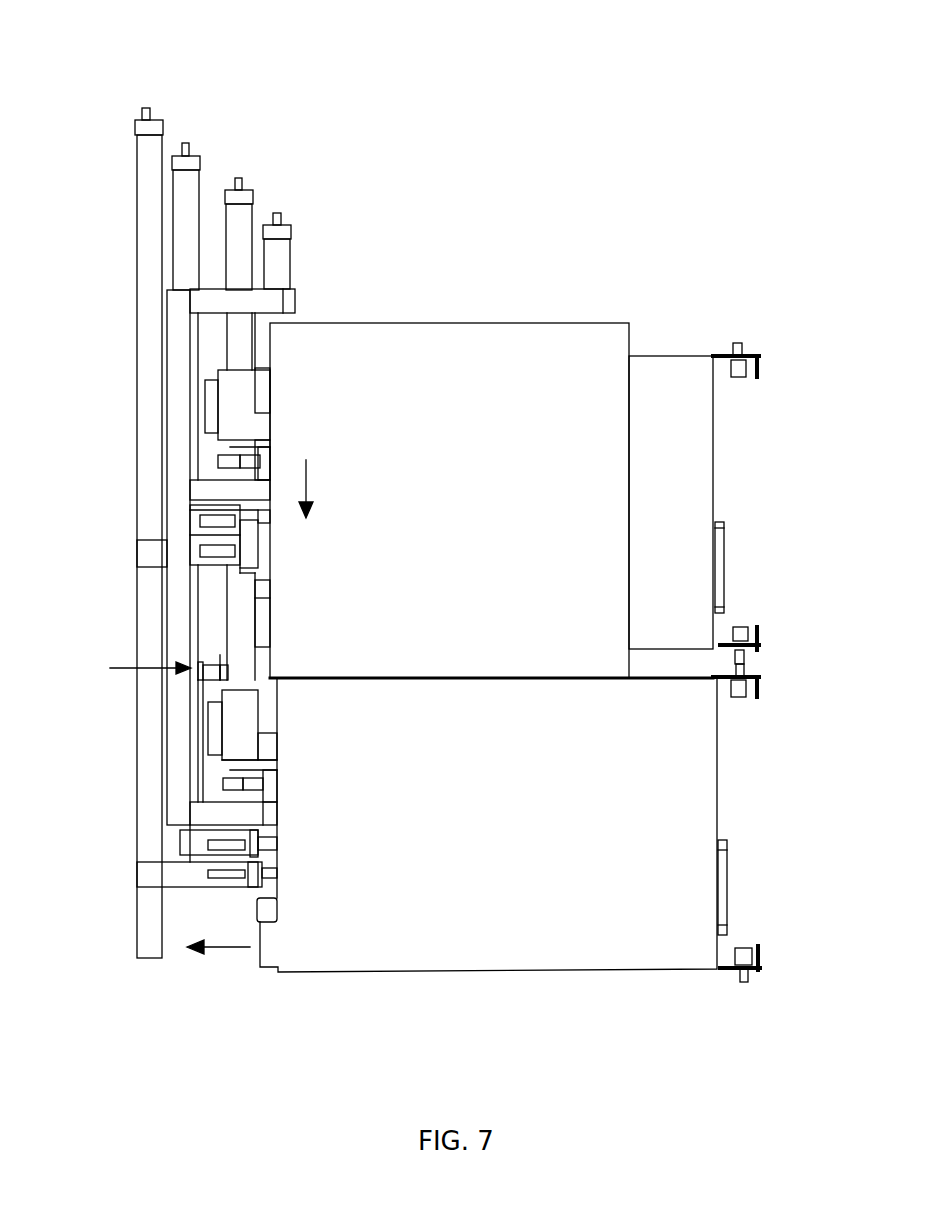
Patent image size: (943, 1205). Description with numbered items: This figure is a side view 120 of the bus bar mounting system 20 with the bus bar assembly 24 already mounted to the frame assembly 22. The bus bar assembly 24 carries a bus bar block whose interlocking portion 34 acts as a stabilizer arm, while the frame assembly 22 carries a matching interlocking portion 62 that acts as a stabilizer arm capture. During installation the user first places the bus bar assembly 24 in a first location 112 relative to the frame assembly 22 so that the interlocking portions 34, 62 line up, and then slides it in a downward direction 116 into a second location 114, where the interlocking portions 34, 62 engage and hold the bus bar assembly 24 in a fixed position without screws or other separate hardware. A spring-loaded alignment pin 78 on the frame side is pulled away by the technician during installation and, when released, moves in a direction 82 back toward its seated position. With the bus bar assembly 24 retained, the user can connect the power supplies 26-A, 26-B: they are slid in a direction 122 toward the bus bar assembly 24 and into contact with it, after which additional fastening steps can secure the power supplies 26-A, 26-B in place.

The bus bar mounting system 20 is at (552, 208).
The frame assembly 22 is at (484, 507).
The bus bar assembly 24 is at (99, 67).
The power supply 26-A is at (697, 508).
The power supply 26-B is at (700, 826).
The interlocking portion 34 is at (248, 552).
The interlocking portion 62 is at (262, 582).
The alignment pin 78 is at (198, 672).
The direction 82 is at (132, 666).
The first location 112 is at (327, 441).
The second location 114 is at (327, 556).
The downward direction 116 is at (310, 480).
The side view 120 is at (724, 67).
The direction 122 is at (222, 947).